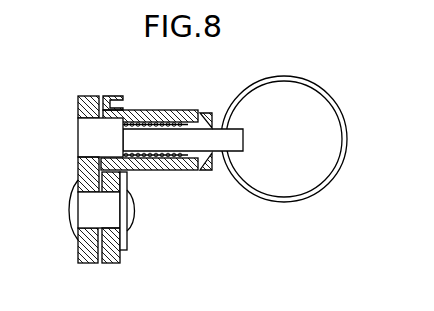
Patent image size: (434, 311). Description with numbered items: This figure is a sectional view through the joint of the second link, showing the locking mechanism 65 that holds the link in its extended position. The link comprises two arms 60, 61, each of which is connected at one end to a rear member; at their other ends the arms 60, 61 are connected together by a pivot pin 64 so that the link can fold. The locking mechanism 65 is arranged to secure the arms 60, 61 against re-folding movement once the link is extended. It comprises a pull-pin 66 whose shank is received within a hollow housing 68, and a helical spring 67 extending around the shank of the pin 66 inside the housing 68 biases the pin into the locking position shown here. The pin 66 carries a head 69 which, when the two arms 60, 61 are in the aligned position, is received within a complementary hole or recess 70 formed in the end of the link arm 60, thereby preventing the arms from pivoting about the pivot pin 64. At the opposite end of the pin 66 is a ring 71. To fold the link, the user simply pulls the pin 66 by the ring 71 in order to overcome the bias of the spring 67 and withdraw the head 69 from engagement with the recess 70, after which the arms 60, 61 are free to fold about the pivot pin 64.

The arm 60 is at (82, 254).
The arm 61 is at (120, 258).
The pivot pin 64 is at (136, 210).
The locking mechanism 65 is at (180, 99).
The pull-pin 66 is at (233, 131).
The helical spring 67 is at (177, 165).
The hollow housing 68 is at (134, 109).
The head 69 is at (85, 148).
The recess 70 is at (82, 128).
The ring 71 is at (307, 194).